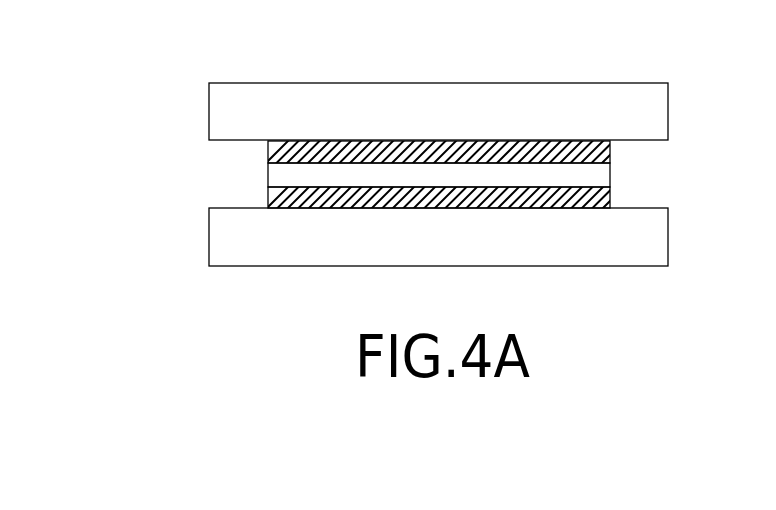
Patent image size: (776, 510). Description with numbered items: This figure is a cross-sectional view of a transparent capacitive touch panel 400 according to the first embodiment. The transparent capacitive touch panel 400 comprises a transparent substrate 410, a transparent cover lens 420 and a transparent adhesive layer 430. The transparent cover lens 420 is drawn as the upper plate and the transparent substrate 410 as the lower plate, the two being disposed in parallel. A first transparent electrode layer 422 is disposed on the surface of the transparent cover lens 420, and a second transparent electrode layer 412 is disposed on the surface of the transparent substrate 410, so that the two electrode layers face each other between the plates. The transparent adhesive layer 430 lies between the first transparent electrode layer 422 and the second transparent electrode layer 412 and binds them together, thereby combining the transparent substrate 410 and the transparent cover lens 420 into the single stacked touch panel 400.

The transparent capacitive touch panel 400 is at (683, 399).
The transparent substrate 410 is at (644, 248).
The second transparent electrode layer 412 is at (610, 190).
The transparent cover lens 420 is at (644, 100).
The first transparent electrode layer 422 is at (610, 144).
The transparent adhesive layer 430 is at (282, 171).